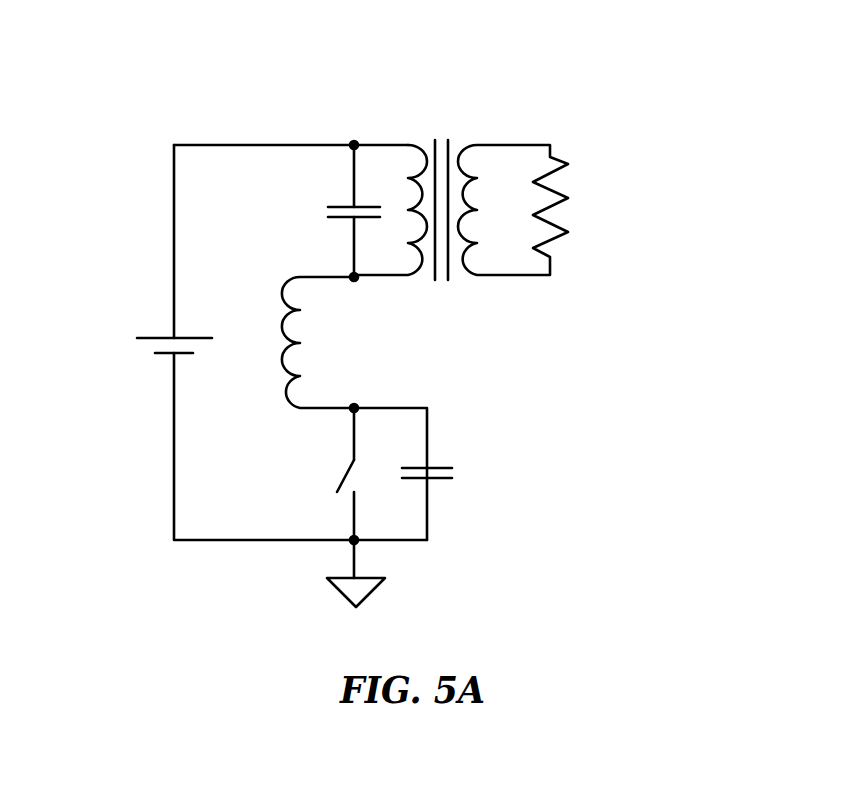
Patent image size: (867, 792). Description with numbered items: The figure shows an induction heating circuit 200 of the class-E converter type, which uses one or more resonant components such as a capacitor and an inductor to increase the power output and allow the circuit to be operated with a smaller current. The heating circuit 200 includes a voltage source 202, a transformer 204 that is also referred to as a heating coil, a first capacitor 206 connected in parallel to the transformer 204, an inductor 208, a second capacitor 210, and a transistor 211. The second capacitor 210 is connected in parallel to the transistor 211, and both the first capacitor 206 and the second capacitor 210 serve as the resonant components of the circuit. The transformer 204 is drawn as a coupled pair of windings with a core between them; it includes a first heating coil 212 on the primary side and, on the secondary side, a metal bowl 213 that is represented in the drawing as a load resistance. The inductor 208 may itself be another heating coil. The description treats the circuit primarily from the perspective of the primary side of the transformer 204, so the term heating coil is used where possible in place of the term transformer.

The induction heating circuit 200 is at (644, 66).
The voltage source 202 is at (155, 335).
The transformer 204 is at (448, 118).
The first capacitor 206 is at (340, 206).
The inductor 208 is at (294, 404).
The second capacitor 210 is at (438, 465).
The transistor 211 is at (346, 468).
The first heating coil 212 is at (416, 143).
The metal bowl 213 is at (464, 145).